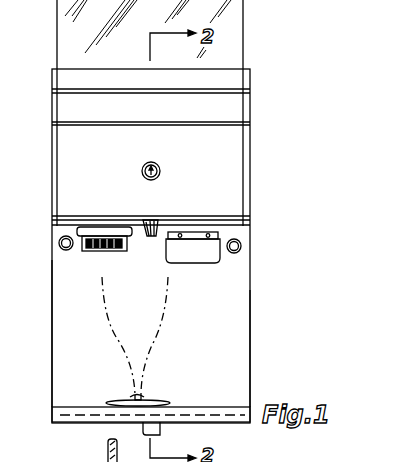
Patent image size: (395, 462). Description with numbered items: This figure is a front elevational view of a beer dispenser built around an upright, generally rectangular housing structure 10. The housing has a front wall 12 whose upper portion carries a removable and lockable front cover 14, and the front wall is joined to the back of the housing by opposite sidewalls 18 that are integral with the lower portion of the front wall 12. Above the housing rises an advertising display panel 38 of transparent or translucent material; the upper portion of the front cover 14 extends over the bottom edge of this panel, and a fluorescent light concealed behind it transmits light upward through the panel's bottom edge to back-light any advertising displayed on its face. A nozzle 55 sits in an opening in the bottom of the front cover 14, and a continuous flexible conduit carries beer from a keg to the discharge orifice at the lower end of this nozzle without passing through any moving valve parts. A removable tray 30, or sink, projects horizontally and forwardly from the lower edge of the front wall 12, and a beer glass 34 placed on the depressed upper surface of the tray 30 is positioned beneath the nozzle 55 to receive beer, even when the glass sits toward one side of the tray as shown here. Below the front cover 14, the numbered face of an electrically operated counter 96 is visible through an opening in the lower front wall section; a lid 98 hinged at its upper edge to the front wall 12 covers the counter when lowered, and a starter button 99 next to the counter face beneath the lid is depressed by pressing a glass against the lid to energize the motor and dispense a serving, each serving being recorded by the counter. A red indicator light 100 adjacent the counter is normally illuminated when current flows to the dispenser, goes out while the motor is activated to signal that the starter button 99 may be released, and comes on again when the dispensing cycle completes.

The housing structure 10 is at (254, 276).
The front wall 12 is at (228, 331).
The front cover 14 is at (235, 157).
The sidewalls 18 is at (52, 292).
The tray 30 is at (82, 416).
The beer glass 34 is at (115, 333).
The advertising display panel 38 is at (245, 15).
The nozzle 55 is at (148, 224).
The counter 96 is at (78, 236).
The lid 98 is at (198, 257).
The starter button 99 is at (131, 249).
The indicator light 100 is at (241, 243).